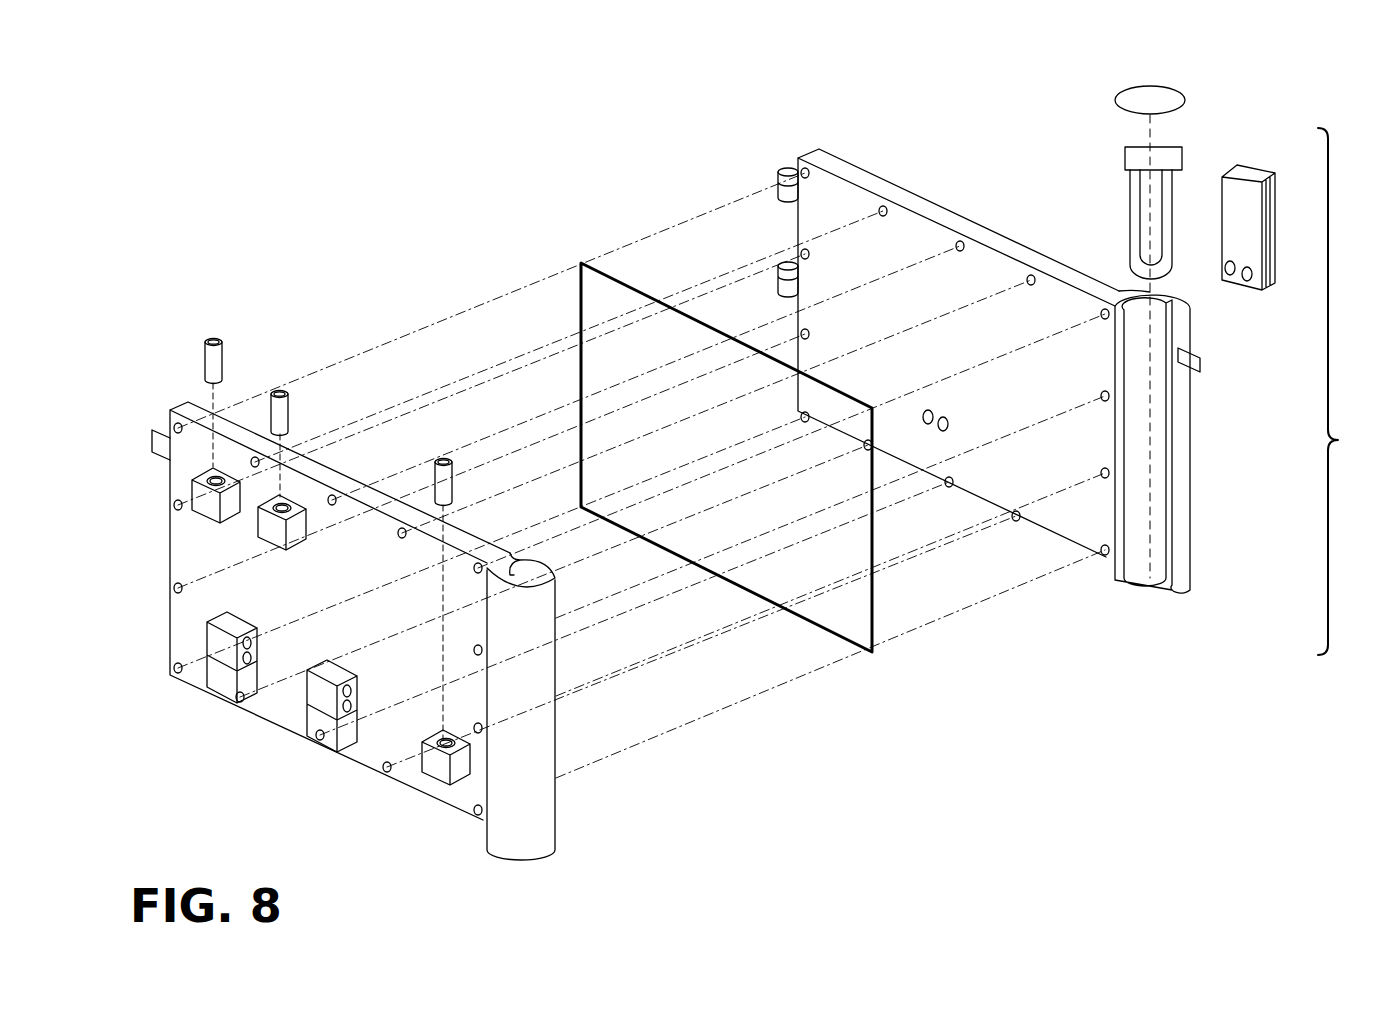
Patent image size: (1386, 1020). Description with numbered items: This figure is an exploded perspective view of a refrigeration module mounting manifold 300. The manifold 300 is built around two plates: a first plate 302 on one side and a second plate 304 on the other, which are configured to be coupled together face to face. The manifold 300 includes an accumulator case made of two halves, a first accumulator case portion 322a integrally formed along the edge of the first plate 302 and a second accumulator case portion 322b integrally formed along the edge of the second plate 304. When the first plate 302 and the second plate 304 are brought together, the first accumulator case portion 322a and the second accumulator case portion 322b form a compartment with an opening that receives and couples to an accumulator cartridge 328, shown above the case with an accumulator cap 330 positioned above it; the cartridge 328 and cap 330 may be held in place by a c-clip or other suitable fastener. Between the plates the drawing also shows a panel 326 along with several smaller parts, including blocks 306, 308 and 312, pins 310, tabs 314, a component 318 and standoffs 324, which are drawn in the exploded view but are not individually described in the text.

The manifold 300 is at (1352, 391).
The first plate 302 is at (460, 815).
The second plate 304 is at (1027, 530).
The connector block 306 is at (387, 767).
The spacer block 308 is at (268, 537).
The alignment pin 310 is at (440, 460).
The clamp block 312 is at (232, 686).
The tab 314 is at (152, 437).
The cover 318 is at (1255, 170).
The first accumulator case portion 322a is at (540, 825).
The second accumulator case portion 322b is at (1185, 576).
The standoff 324 is at (778, 275).
The panel 326 is at (580, 263).
The accumulator cartridge 328 is at (1125, 185).
The accumulator cap 330 is at (1152, 86).